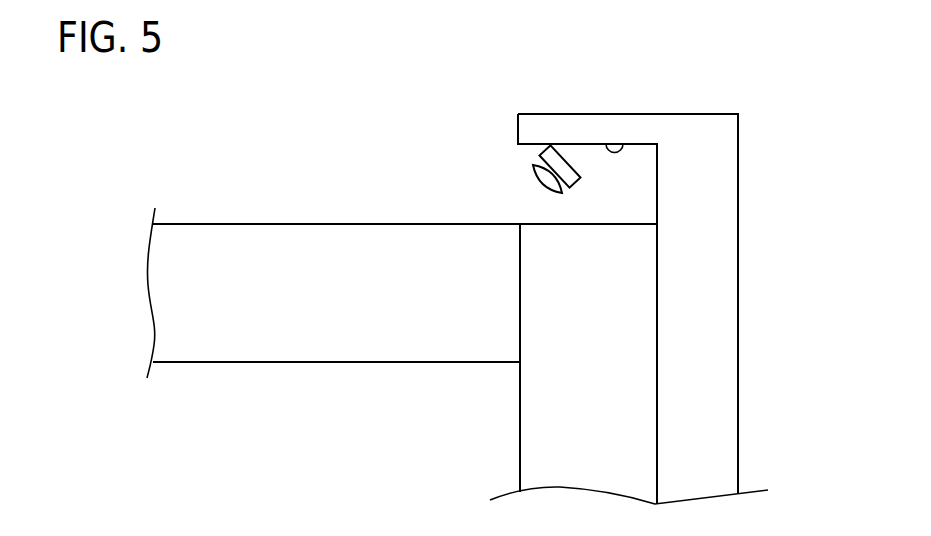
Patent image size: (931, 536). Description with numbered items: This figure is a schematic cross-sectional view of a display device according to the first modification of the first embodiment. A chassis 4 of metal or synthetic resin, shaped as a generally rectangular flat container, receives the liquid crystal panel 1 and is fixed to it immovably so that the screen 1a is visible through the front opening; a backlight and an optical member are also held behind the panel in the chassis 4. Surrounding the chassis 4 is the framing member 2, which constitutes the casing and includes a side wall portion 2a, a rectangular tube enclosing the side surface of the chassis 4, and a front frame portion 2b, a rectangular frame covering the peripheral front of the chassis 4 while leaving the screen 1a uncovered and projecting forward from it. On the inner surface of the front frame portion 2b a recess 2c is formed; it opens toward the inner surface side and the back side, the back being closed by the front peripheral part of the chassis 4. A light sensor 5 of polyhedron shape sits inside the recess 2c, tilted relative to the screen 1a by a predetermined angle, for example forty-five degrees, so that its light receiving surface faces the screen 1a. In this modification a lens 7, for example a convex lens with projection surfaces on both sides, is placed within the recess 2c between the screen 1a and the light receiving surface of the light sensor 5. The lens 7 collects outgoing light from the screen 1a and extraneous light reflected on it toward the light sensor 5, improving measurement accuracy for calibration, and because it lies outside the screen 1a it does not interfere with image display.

The liquid crystal panel 1 is at (262, 247).
The screen 1a is at (350, 222).
The framing member 2 is at (744, 267).
The side wall portion 2a is at (720, 411).
The front frame portion 2b is at (541, 123).
The recess 2c is at (622, 143).
The chassis 4 is at (530, 420).
The light sensor 5 is at (580, 153).
The lens 7 is at (540, 185).